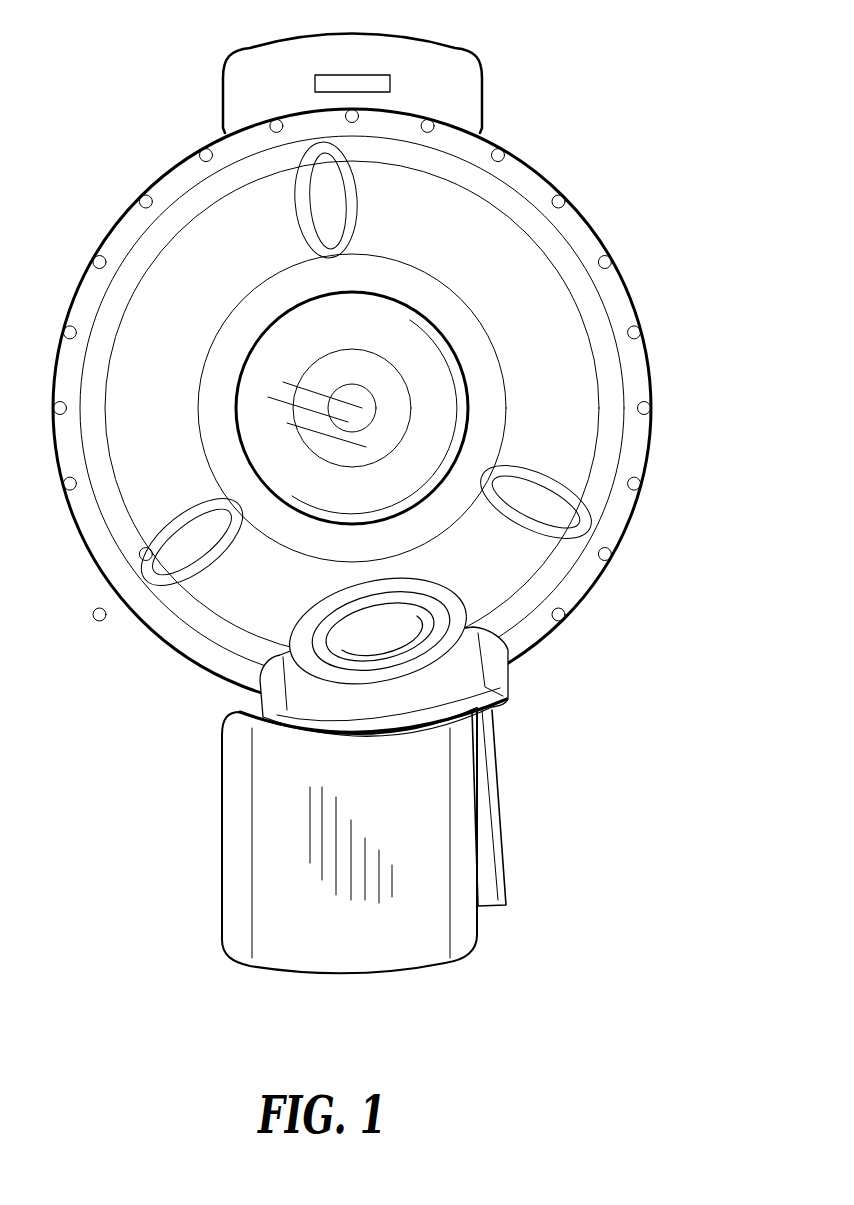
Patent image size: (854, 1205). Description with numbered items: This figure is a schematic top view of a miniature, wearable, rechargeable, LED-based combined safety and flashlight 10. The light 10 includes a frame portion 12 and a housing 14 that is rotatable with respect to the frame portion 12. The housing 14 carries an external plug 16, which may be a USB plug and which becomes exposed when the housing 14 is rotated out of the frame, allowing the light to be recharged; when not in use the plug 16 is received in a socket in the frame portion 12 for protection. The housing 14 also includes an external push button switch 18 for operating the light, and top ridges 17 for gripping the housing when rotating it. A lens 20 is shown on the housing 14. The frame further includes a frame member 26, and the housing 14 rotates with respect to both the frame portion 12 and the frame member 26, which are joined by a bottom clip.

The combined safety and flashlight 10 is at (603, 128).
The frame portion 12 is at (287, 910).
The housing 14 is at (557, 398).
The external plug 16 is at (493, 872).
The top ridges 17 is at (327, 205).
The external push button switch 18 is at (387, 623).
The lens 20 is at (427, 363).
The frame member 26 is at (250, 87).